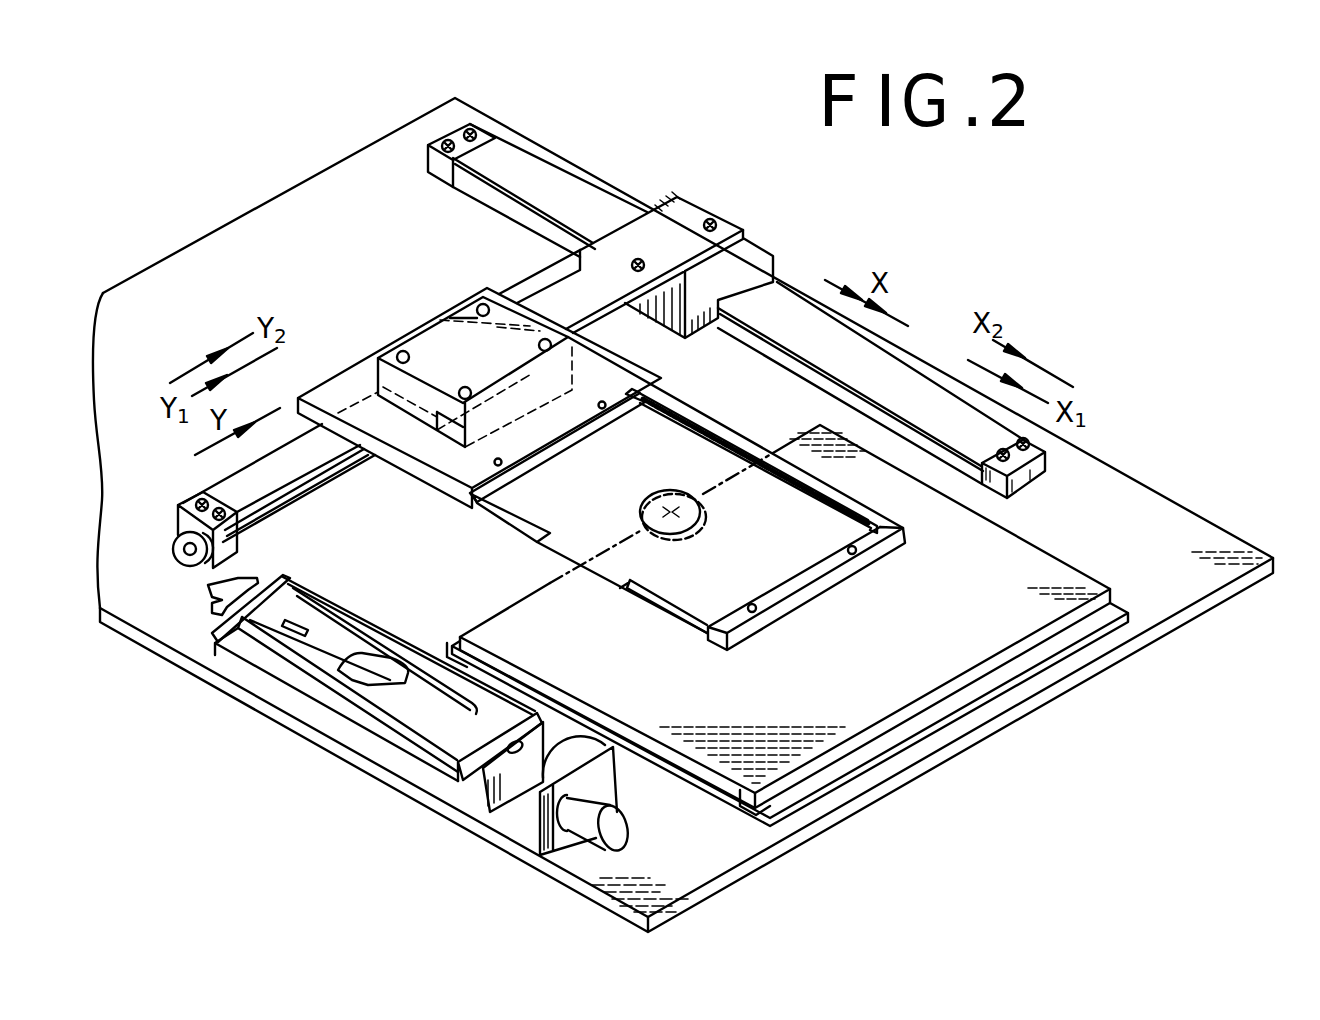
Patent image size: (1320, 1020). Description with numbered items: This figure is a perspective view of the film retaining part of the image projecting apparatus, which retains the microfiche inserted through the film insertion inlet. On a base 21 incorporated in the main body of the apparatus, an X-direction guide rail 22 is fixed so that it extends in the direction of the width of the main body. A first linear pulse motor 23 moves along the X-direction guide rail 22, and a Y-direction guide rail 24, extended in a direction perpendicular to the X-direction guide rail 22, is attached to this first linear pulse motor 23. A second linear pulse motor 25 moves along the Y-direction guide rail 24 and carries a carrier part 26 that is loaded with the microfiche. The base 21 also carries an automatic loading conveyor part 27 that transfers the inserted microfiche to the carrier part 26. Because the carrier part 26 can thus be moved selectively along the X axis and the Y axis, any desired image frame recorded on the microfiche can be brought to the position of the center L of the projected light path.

The base 21 is at (1126, 518).
The X-direction guide rail 22 is at (562, 180).
The first linear pulse motor 23 is at (678, 200).
The Y-direction guide rail 24 is at (316, 486).
The second linear pulse motor 25 is at (418, 332).
The carrier part 26 is at (696, 408).
The automatic loading conveyor part 27 is at (300, 704).
The center of the projected light path L is at (668, 511).